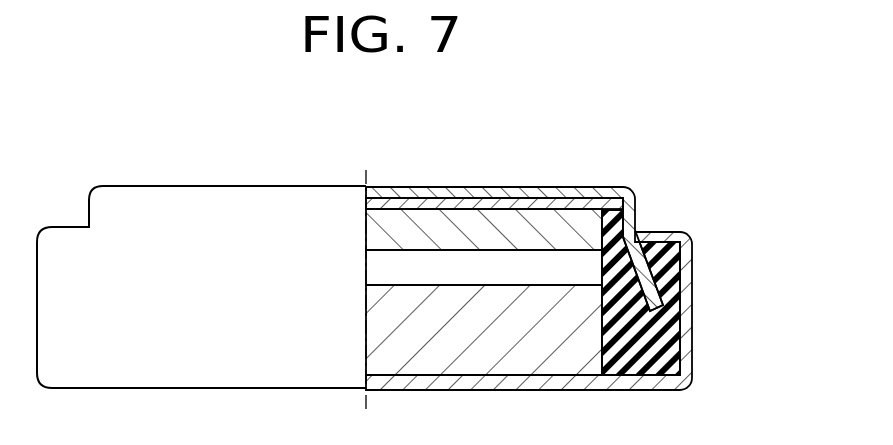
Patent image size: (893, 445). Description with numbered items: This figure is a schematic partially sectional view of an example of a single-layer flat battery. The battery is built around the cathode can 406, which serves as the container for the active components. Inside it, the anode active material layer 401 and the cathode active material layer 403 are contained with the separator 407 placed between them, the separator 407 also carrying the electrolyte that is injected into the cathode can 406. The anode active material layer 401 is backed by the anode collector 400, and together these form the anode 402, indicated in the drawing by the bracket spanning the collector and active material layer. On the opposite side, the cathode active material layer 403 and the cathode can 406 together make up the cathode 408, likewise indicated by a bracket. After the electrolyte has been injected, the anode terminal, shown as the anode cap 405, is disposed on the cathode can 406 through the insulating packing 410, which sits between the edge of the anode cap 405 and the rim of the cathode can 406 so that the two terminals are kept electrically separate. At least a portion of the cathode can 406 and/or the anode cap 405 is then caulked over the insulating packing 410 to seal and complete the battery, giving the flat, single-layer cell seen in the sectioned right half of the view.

The anode collector 400 is at (511, 204).
The anode active material layer 401 is at (574, 214).
The anode 402 is at (511, 176).
The cathode active material layer 403 is at (583, 335).
The anode terminal (anode cap) 405 is at (411, 192).
The cathode can 406 is at (655, 384).
The separator and electrolyte 407 is at (463, 262).
The cathode 408 is at (603, 314).
The insulating packing 410 is at (646, 240).